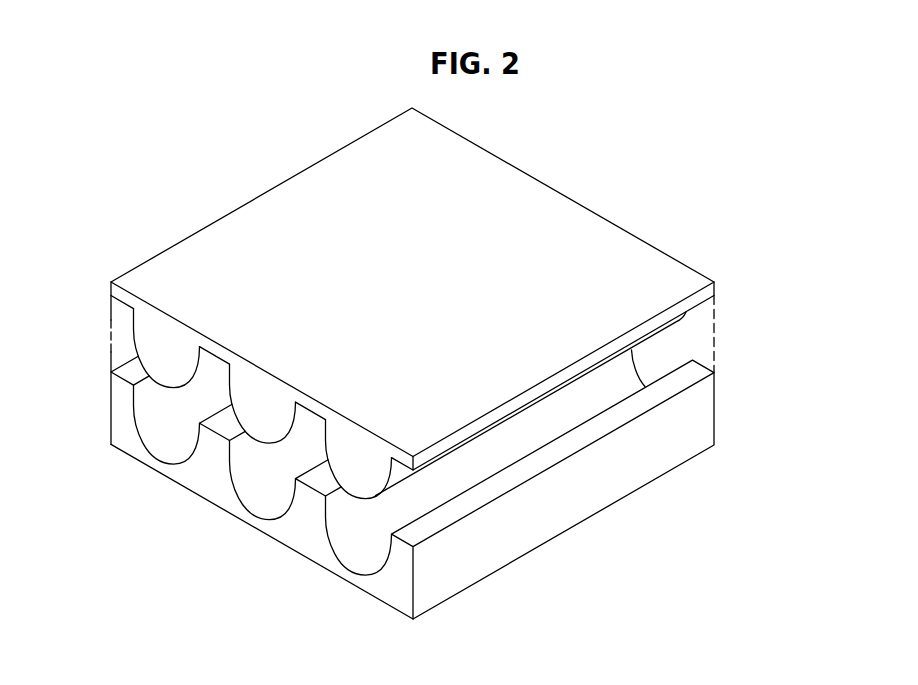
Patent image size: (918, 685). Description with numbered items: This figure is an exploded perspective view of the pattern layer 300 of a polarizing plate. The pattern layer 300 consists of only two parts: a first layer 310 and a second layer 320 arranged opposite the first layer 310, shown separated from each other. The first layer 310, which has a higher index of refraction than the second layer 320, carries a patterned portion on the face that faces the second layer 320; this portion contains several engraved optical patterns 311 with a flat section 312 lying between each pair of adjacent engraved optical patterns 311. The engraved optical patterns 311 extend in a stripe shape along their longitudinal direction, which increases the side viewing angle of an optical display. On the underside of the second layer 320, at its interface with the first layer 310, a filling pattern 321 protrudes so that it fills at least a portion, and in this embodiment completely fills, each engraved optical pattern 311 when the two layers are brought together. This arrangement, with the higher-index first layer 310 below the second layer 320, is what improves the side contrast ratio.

The pattern layer 300 is at (673, 229).
The first layer 310 is at (714, 405).
The engraved optical pattern 311 is at (361, 573).
The flat section 312 is at (210, 431).
The second layer 320 is at (714, 291).
The filling pattern 321 is at (145, 335).